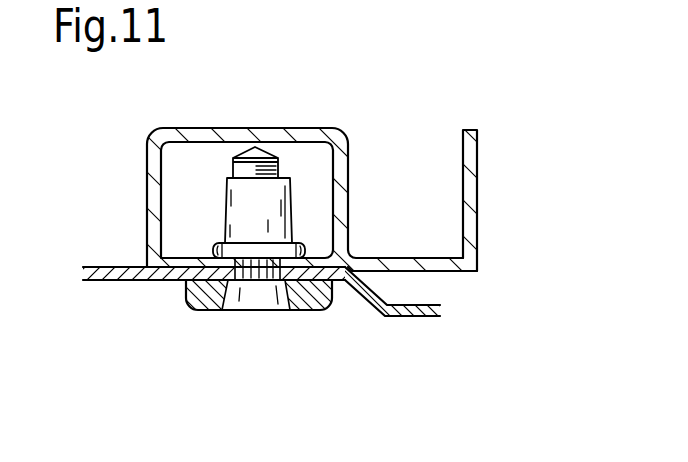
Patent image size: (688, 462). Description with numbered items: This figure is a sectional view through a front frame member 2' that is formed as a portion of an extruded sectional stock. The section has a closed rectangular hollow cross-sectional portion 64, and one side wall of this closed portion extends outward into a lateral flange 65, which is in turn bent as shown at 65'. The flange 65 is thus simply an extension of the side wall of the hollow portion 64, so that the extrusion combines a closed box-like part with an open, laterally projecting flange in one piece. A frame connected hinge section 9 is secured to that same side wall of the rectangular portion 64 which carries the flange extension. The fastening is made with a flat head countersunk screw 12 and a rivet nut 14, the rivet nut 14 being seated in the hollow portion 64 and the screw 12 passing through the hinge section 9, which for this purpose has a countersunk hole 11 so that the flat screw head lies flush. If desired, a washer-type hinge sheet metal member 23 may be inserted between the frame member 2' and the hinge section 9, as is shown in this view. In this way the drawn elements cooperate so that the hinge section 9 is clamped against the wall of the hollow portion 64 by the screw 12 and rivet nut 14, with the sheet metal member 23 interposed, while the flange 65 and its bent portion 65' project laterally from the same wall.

The front frame member 2' is at (303, 177).
The closed rectangular hollow cross-sectional portion 64 is at (208, 136).
The flange 65 is at (412, 238).
The bent flange portion 65' is at (528, 200).
The frame connected hinge section 9 is at (187, 293).
The countersunk hole 11 is at (217, 310).
The flat head countersunk screw 12 is at (265, 300).
The rivet nut 14 is at (238, 215).
The washer-type hinge sheet metal member 23 is at (420, 303).